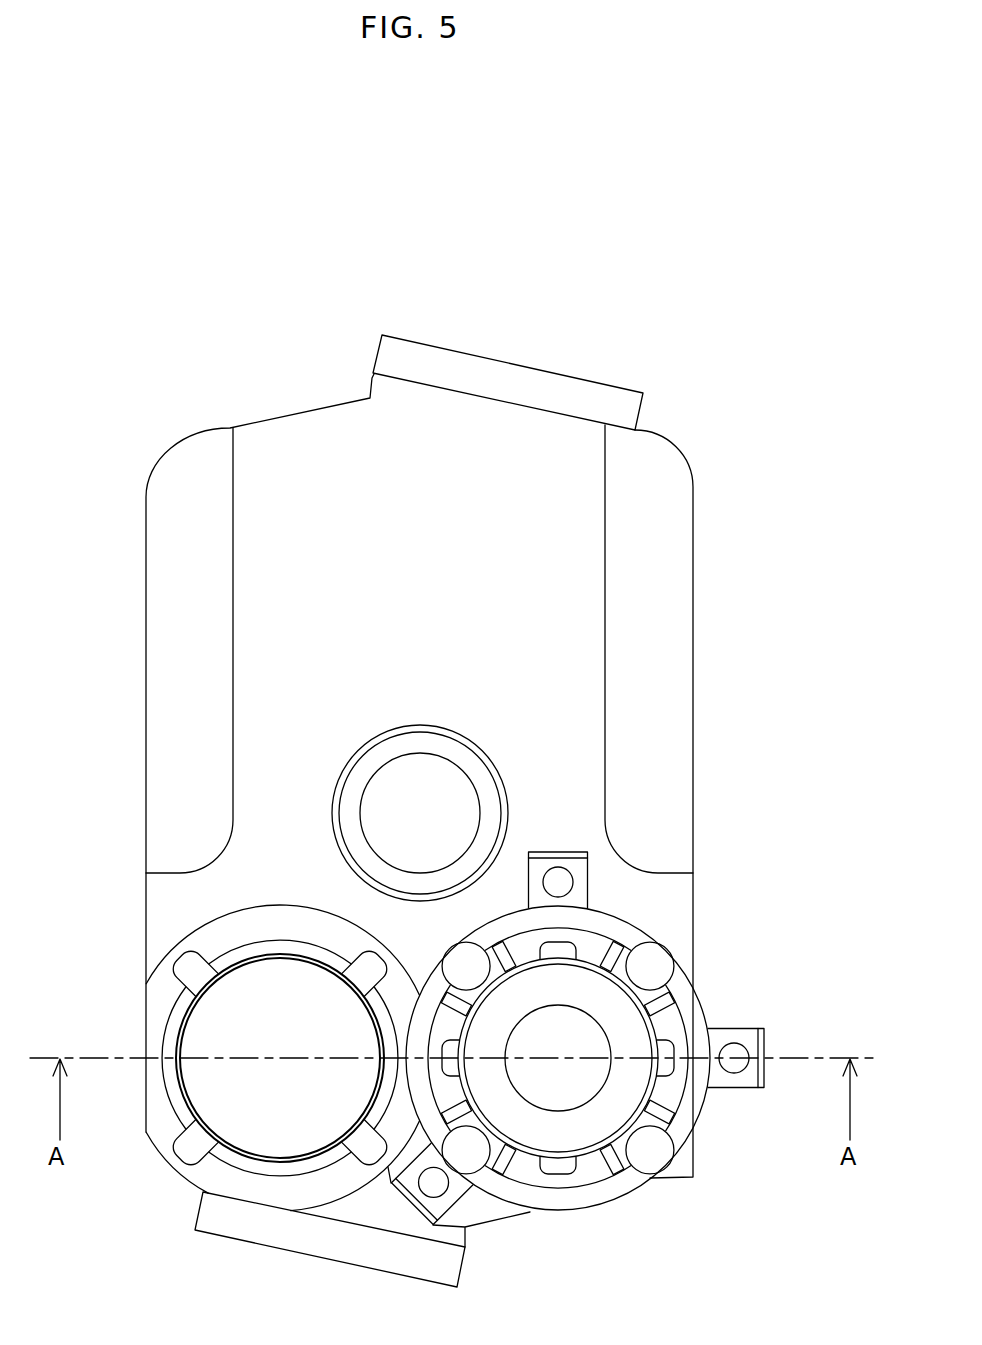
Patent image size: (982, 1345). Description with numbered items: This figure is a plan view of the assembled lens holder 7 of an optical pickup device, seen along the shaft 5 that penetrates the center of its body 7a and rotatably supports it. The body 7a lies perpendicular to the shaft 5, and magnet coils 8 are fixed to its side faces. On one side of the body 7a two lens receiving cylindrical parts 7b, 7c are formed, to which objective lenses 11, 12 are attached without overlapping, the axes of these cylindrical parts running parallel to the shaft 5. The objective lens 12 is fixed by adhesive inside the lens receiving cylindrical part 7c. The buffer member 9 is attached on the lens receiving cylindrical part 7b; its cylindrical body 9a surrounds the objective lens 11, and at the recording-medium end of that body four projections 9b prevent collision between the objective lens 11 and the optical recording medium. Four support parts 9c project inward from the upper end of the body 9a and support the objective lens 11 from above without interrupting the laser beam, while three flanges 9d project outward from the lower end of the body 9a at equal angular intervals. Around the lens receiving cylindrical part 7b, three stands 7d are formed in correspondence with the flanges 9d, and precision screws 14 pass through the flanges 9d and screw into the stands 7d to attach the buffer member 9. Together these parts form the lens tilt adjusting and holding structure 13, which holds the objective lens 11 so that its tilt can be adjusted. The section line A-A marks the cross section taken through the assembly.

The shaft 5 is at (418, 768).
The lens holder 7 is at (146, 585).
The body 7a is at (146, 670).
The lens receiving cylindrical part 7b is at (672, 1030).
The lens receiving cylindrical part 7c is at (270, 905).
The stand 7d is at (548, 852).
The magnet coil 8 is at (527, 365).
The buffer member 9 is at (700, 988).
The body 9a is at (622, 1205).
The projection 9b is at (475, 965).
The support part 9c is at (498, 995).
The flange 9d is at (575, 848).
The objective lens 11 is at (562, 1122).
The objective lens 12 is at (237, 1107).
The lens tilt adjusting and holding structure 13 is at (794, 962).
The precision screw 14 is at (560, 883).